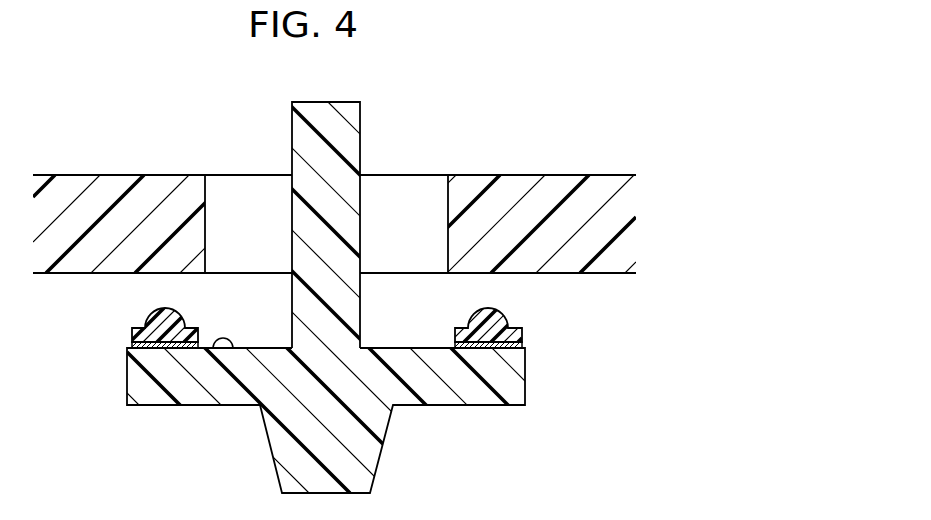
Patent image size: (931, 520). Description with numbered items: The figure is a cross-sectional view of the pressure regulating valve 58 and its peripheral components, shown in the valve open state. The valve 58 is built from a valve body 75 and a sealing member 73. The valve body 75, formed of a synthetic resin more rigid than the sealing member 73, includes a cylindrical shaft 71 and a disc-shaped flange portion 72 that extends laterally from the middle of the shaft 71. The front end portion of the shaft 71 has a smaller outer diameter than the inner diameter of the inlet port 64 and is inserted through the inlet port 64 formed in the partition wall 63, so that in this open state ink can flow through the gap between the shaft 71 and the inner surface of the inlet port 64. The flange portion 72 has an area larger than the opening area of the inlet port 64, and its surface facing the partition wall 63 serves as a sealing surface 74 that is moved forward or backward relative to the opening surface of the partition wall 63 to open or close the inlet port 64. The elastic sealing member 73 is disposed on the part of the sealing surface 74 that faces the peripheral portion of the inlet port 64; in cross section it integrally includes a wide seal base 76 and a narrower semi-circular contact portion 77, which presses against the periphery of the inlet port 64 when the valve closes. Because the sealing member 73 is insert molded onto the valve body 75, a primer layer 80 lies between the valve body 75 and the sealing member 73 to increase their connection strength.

The pressure regulating valve 58 is at (113, 421).
The partition wall 63 is at (523, 175).
The inlet port 64 is at (236, 203).
The shaft 71 is at (353, 142).
The flange portion 72 is at (440, 398).
The sealing member 73 is at (132, 330).
The sealing surface 74 is at (217, 350).
The valve body 75 is at (498, 405).
The seal base 76 is at (522, 340).
The contact portion 77 is at (495, 311).
The primer layer 80 is at (133, 347).